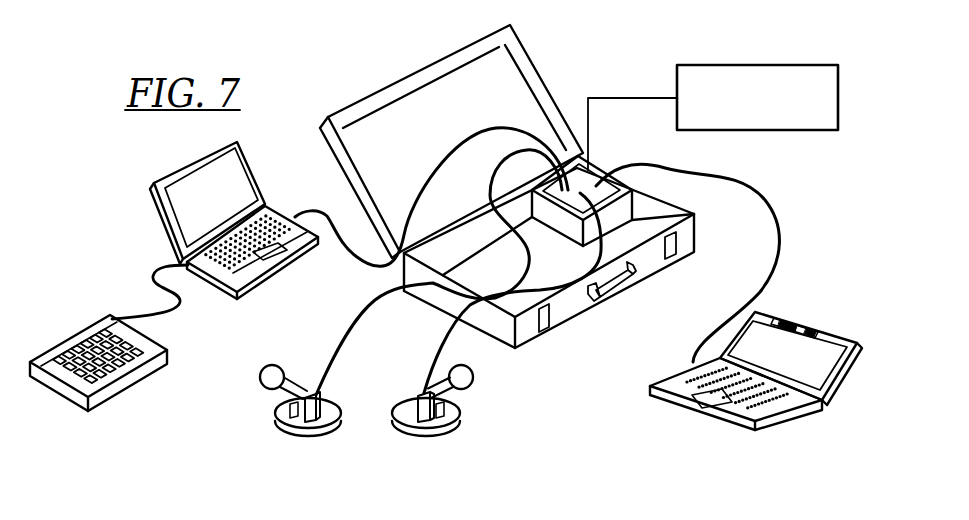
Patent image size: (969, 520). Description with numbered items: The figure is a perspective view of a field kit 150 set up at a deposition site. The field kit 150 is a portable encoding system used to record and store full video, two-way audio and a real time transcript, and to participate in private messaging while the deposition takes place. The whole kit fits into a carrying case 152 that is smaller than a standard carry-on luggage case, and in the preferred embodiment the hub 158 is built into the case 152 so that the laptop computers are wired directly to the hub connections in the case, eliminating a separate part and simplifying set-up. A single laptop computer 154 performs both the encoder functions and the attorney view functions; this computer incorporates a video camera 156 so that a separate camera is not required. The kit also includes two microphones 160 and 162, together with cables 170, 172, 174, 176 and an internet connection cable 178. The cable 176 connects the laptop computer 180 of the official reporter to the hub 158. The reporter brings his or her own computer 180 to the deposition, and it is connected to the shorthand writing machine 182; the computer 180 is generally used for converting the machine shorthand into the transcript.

The field kit 150 is at (555, 44).
The case 152 is at (433, 64).
The laptop computer 154 is at (837, 383).
The video camera 156 is at (795, 320).
The hub 158 is at (625, 209).
The microphone 160 is at (450, 430).
The microphone 162 is at (277, 410).
The cable 170 is at (780, 248).
The cable 172 is at (440, 340).
The cable 174 is at (366, 318).
The cable 176 is at (330, 212).
The internet connection cable 178 is at (608, 98).
The laptop computer 180 is at (165, 223).
The shorthand writing machine 182 is at (110, 333).